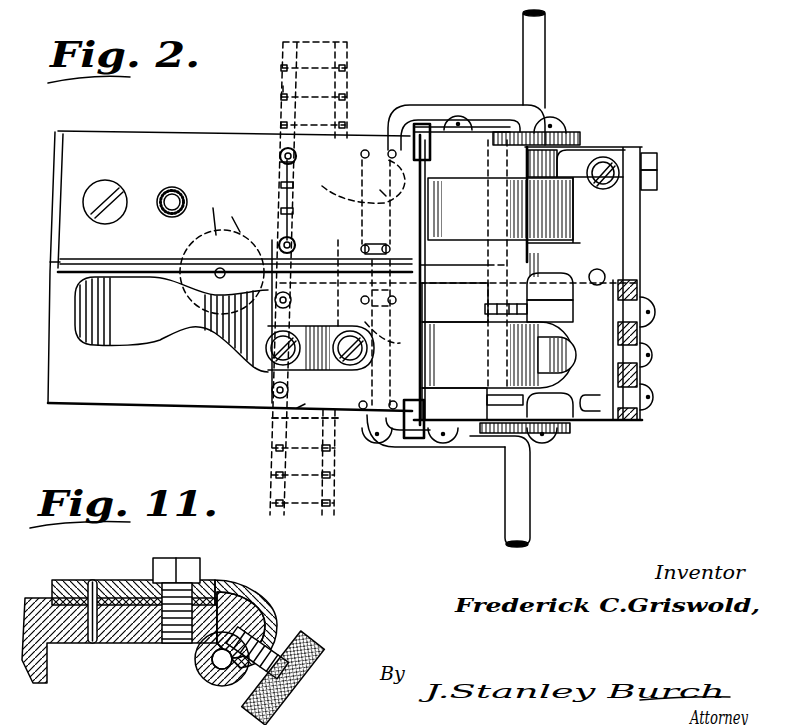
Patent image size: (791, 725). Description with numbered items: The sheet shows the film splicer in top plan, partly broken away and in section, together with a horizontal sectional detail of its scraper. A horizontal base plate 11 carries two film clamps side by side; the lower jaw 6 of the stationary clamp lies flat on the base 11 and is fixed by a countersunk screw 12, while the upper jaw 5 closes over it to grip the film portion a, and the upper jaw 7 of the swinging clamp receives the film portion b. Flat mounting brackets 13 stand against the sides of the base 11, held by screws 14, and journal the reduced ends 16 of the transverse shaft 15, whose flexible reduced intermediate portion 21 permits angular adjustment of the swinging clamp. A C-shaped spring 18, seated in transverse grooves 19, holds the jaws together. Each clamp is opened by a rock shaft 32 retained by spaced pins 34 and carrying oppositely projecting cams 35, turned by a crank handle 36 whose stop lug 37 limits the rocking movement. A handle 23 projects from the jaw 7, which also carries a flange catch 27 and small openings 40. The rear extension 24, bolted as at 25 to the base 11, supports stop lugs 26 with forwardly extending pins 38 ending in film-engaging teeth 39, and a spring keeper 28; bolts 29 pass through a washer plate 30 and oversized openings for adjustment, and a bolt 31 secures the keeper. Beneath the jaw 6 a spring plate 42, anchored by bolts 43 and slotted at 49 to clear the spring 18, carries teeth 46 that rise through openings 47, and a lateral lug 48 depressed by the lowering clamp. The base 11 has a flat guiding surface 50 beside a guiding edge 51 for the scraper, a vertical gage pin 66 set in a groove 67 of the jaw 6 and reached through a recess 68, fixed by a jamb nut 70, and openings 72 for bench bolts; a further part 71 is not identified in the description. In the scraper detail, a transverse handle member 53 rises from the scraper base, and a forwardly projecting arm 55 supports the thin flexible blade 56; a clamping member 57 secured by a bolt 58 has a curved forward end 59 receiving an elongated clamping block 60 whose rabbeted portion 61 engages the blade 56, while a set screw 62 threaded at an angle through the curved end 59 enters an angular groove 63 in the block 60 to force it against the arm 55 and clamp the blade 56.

In FIG. 2, the base plate 11 is at (52, 362).
In FIG. 2, the screw 12 is at (104, 190).
In FIG. 2, the lower jaw of stationary clamp 6 is at (173, 183).
In FIG. 2, the openings 72 is at (171, 188).
In FIG. 2, the lever bar 71 is at (132, 258).
In FIG. 2, the jamb nut 70 is at (198, 258).
In FIG. 2, the vertical gage pin 66 is at (205, 300).
In FIG. 2, the vertical groove 67 is at (212, 210).
In FIG. 2, the recess 68 is at (234, 214).
In FIG. 2, the guiding edge 51 is at (60, 268).
In FIG. 2, the handle 23 is at (120, 330).
In FIG. 2, the flat upper surface portion 50 is at (185, 378).
In FIG. 2, the flange catch 27 is at (266, 372).
In FIG. 2, the openings 40 is at (290, 292).
In FIG. 2, the upper jaw of stationary clamp 5 is at (300, 243).
In FIG. 2, the film-engaging teeth 46 is at (296, 156).
In FIG. 2, the lug 48 is at (283, 150).
In FIG. 2, the openings 47 is at (282, 162).
In FIG. 2, the film portion a is at (282, 88).
In FIG. 2, the reduced ends 16 is at (291, 257).
In FIG. 2, the pins 34 is at (392, 150).
In FIG. 2, the cams 35 is at (345, 192).
In FIG. 2, the rock shaft 32 is at (386, 196).
In FIG. 2, the handle 36 is at (480, 112).
In FIG. 2, the stop lug 37 is at (433, 160).
In FIG. 2, the screws 14 is at (562, 498).
In FIG. 2, the mounting brackets 13 is at (585, 464).
In FIG. 2, the slot 49 is at (583, 172).
In FIG. 2, the bolts 43 is at (623, 170).
In FIG. 2, the bolts 25 is at (657, 180).
In FIG. 2, the extension 24 is at (640, 212).
In FIG. 2, the spring plate 42 is at (553, 267).
In FIG. 2, the washer plate 30 is at (652, 292).
In FIG. 2, the bolts 29 is at (655, 315).
In FIG. 2, the bolt 31 is at (652, 360).
In FIG. 2, the stop lugs 26 is at (578, 424).
In FIG. 2, the C-shaped spring 18 is at (497, 283).
In FIG. 2, the transverse shaft 15 is at (487, 224).
In FIG. 2, the transverse grooves 19 is at (426, 262).
In FIG. 2, the reduced intermediate portion 21 is at (492, 270).
In FIG. 2, the film-engaging teeth 39 is at (480, 312).
In FIG. 2, the pins 38 is at (535, 293).
In FIG. 2, the spring keeper 28 is at (545, 352).
In FIG. 2, the upper jaw of swinging clamp 7 is at (297, 408).
In FIG. 2, the film portion b is at (270, 449).
In FIG. 11, the transverse member 53 is at (48, 670).
In FIG. 11, the clamping member 57 is at (150, 580).
In FIG. 11, the curved forward end portion 59 is at (272, 612).
In FIG. 11, the scraper blade 56 is at (262, 633).
In FIG. 11, the forwardly projecting portion 55 is at (120, 590).
In FIG. 11, the bolt 58 is at (200, 562).
In FIG. 11, the clamping block 60 is at (200, 675).
In FIG. 11, the rabbeted portion 61 is at (215, 674).
In FIG. 11, the groove 63 is at (278, 652).
In FIG. 11, the set screw 62 is at (302, 668).